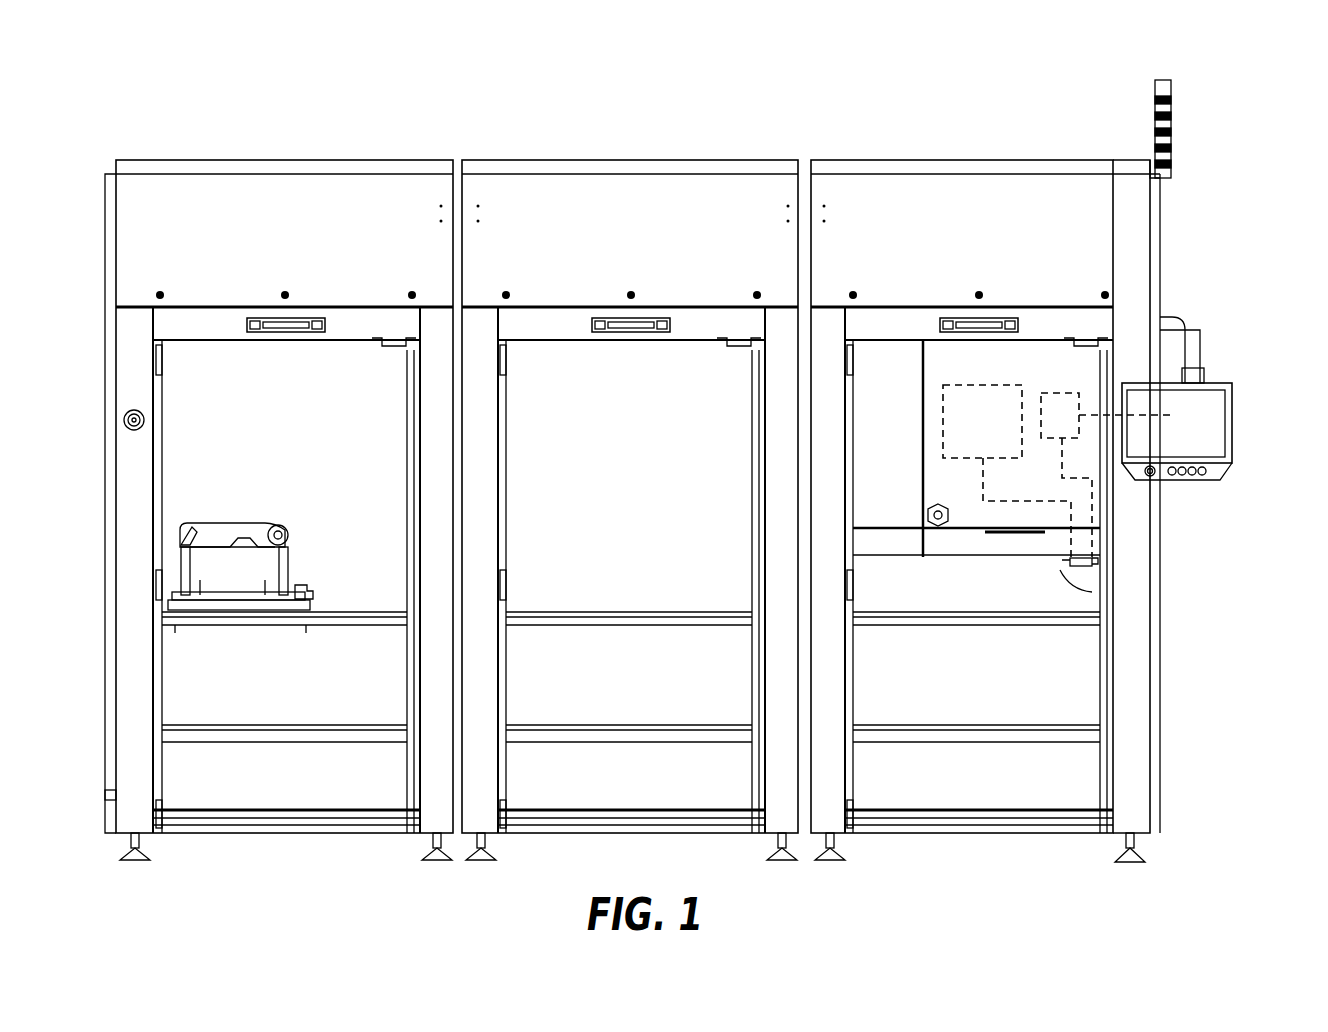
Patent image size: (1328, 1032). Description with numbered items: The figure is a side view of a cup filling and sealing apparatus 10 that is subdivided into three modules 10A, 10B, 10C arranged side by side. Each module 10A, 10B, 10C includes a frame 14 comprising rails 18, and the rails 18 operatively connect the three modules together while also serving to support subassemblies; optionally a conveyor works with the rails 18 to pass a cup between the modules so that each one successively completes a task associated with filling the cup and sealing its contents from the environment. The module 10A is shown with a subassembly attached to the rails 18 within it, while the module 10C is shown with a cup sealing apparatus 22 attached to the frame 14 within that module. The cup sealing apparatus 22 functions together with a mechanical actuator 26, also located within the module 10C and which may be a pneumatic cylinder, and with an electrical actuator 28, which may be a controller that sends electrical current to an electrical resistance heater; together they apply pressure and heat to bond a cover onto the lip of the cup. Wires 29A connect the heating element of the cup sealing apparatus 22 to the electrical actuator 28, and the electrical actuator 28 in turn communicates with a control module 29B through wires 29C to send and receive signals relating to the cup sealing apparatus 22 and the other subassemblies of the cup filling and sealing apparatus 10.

The cup filling and sealing apparatus 10 is at (746, 74).
The module 10A is at (276, 146).
The module 10B is at (623, 148).
The module 10C is at (978, 148).
The frame 14 is at (1133, 717).
The rails 18 is at (1068, 627).
The cup sealing apparatus 22 is at (1082, 572).
The mechanical actuator 26 is at (1003, 383).
The electrical actuator 28 is at (1062, 393).
The wires 29A is at (1092, 509).
The control module 29B is at (1213, 410).
The wires 29C is at (1158, 418).